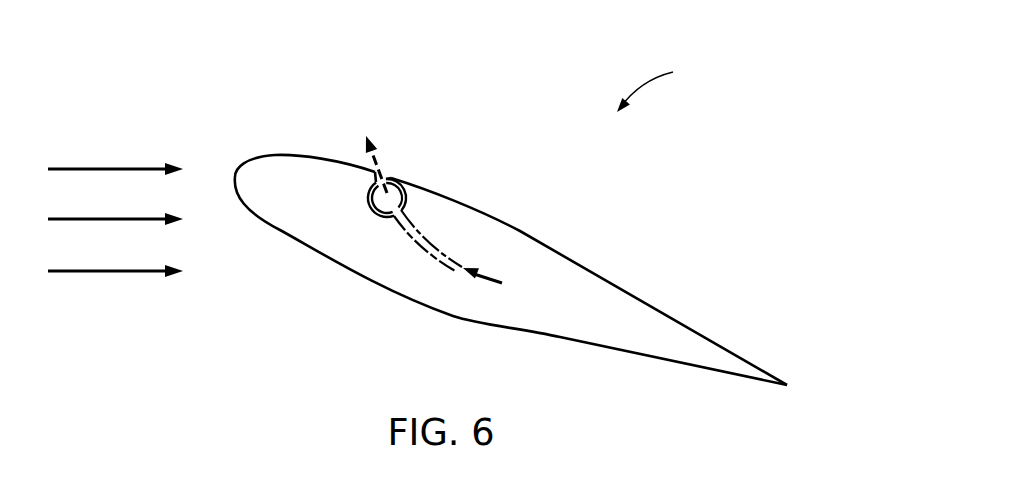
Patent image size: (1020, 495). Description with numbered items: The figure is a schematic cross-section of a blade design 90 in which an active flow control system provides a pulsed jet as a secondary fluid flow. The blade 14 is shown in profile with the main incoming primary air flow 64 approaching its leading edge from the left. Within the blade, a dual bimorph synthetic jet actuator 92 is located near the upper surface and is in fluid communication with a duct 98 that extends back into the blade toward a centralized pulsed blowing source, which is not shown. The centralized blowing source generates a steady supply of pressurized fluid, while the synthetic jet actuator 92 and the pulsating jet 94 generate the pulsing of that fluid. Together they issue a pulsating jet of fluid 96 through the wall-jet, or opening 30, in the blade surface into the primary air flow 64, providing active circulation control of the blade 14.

The blade 14 is at (618, 298).
The opening 30 is at (390, 170).
The main incoming primary air flow 64 is at (124, 168).
The blade design 90 is at (661, 87).
The dual bimorph synthetic jet actuator 92 is at (412, 197).
The pulsating jet 94 is at (377, 150).
The pulsating jet of fluid 96 is at (362, 148).
The duct 98 is at (461, 270).